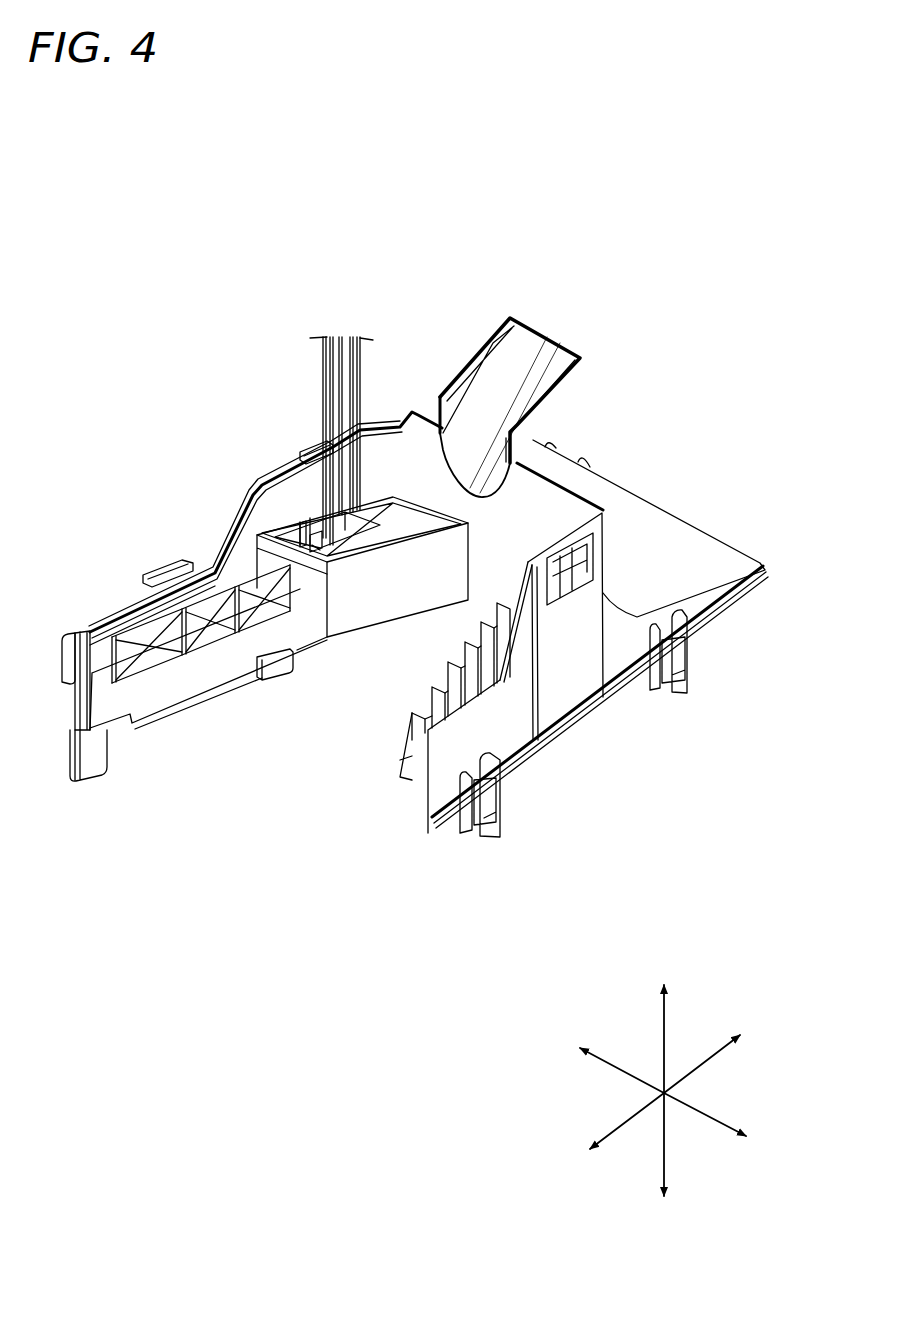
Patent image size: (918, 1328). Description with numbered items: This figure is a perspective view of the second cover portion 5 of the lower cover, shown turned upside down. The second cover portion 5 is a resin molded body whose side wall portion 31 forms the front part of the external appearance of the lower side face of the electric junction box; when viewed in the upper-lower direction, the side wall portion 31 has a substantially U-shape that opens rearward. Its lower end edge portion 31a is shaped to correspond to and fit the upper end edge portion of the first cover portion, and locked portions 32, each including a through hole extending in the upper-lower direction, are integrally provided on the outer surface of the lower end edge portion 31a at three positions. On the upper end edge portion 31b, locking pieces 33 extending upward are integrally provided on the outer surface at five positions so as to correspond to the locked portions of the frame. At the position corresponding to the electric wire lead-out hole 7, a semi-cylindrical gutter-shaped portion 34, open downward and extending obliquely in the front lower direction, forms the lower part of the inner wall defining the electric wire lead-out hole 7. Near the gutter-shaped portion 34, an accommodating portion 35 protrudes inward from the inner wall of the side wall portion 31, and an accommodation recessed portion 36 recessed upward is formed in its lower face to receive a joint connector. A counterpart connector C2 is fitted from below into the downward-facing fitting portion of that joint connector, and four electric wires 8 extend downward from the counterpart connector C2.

The second cover portion 5 is at (667, 268).
The electric wire lead-out hole 7 is at (485, 335).
The electric wires 8 is at (322, 375).
The side wall portion 31 is at (165, 690).
The lower end edge portion 31a is at (105, 606).
The upper end edge portion 31b is at (215, 688).
The locked portions 32 is at (170, 574).
The locking pieces 33 is at (285, 680).
The gutter-shaped portion 34 is at (535, 330).
The accommodating portion 35 is at (367, 538).
The accommodation recessed portion 36 is at (372, 500).
The counterpart connector C2 is at (318, 522).